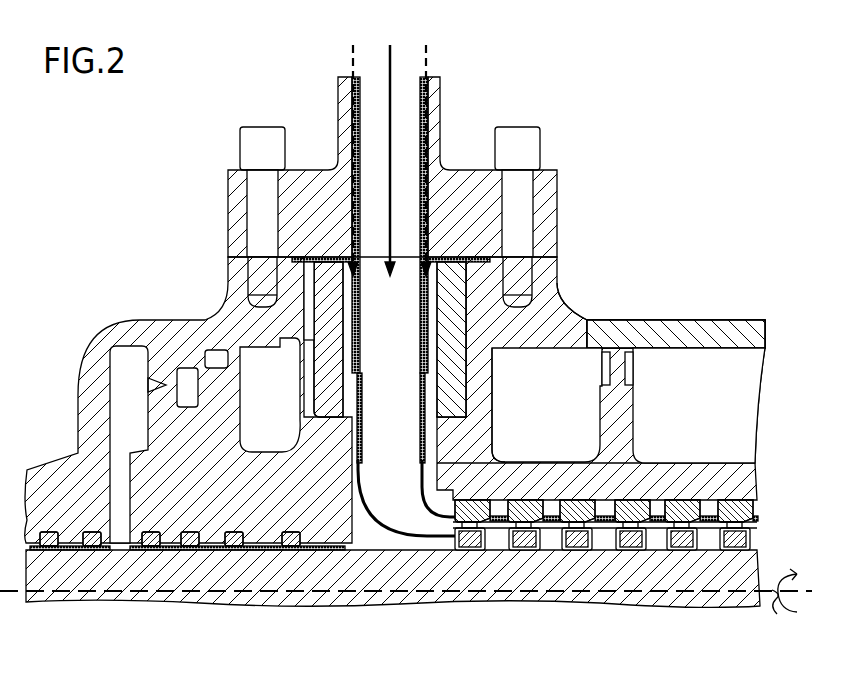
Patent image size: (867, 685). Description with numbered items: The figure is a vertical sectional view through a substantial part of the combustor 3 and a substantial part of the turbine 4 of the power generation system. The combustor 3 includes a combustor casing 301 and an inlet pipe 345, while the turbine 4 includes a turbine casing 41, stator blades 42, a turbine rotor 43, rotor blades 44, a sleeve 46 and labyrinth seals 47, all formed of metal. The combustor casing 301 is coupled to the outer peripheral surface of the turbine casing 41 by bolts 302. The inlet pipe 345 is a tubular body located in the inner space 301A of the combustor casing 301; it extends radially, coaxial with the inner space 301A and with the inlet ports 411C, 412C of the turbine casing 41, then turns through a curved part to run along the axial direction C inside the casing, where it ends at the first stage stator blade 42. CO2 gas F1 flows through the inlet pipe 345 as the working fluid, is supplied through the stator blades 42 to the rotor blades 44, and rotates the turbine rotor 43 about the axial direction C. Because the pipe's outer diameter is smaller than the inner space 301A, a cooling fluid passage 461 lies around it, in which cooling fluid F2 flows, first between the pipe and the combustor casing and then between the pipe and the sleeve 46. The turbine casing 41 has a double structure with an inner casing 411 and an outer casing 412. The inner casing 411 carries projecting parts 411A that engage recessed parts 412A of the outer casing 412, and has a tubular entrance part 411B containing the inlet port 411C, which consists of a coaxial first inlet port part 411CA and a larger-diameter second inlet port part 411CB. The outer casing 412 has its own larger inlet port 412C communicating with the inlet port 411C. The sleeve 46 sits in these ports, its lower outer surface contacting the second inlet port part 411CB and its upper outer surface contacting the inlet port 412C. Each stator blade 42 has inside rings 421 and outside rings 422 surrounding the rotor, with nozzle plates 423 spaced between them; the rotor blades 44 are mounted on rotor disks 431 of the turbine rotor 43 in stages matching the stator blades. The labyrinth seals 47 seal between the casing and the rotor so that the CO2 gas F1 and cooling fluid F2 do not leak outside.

The combustor 3 is at (321, 106).
The turbine 4 is at (84, 276).
The turbine casing 41 is at (40, 424).
The inner casing 411 is at (150, 451).
The outer casing 412 is at (90, 432).
The projecting part 411A is at (204, 322).
The recessed part 412A is at (160, 322).
The entrance part 411B is at (298, 398).
The inlet port 411C is at (548, 403).
The first inlet port part 411CA is at (463, 440).
The second inlet port part 411CB is at (463, 403).
The inlet port 412C is at (554, 303).
The stator blades 42 is at (570, 582).
The inside rings 421 is at (468, 542).
The outside rings 422 is at (492, 532).
The nozzle plates 423 is at (502, 524).
The turbine rotor 43 is at (155, 590).
The rotor disks 431 is at (497, 520).
The rotor blades 44 is at (522, 522).
The sleeve 46 is at (322, 275).
The cooling fluid passage 461 is at (464, 272).
The labyrinth seals 47 is at (85, 548).
The combustor casing 301 is at (240, 218).
The inner space 301A is at (429, 164).
The bolts 302 is at (266, 131).
The inlet pipe 345 is at (431, 95).
The CO2 gas F1 is at (389, 151).
The cooling fluid F2 is at (389, 151).
The axial direction C is at (406, 603).